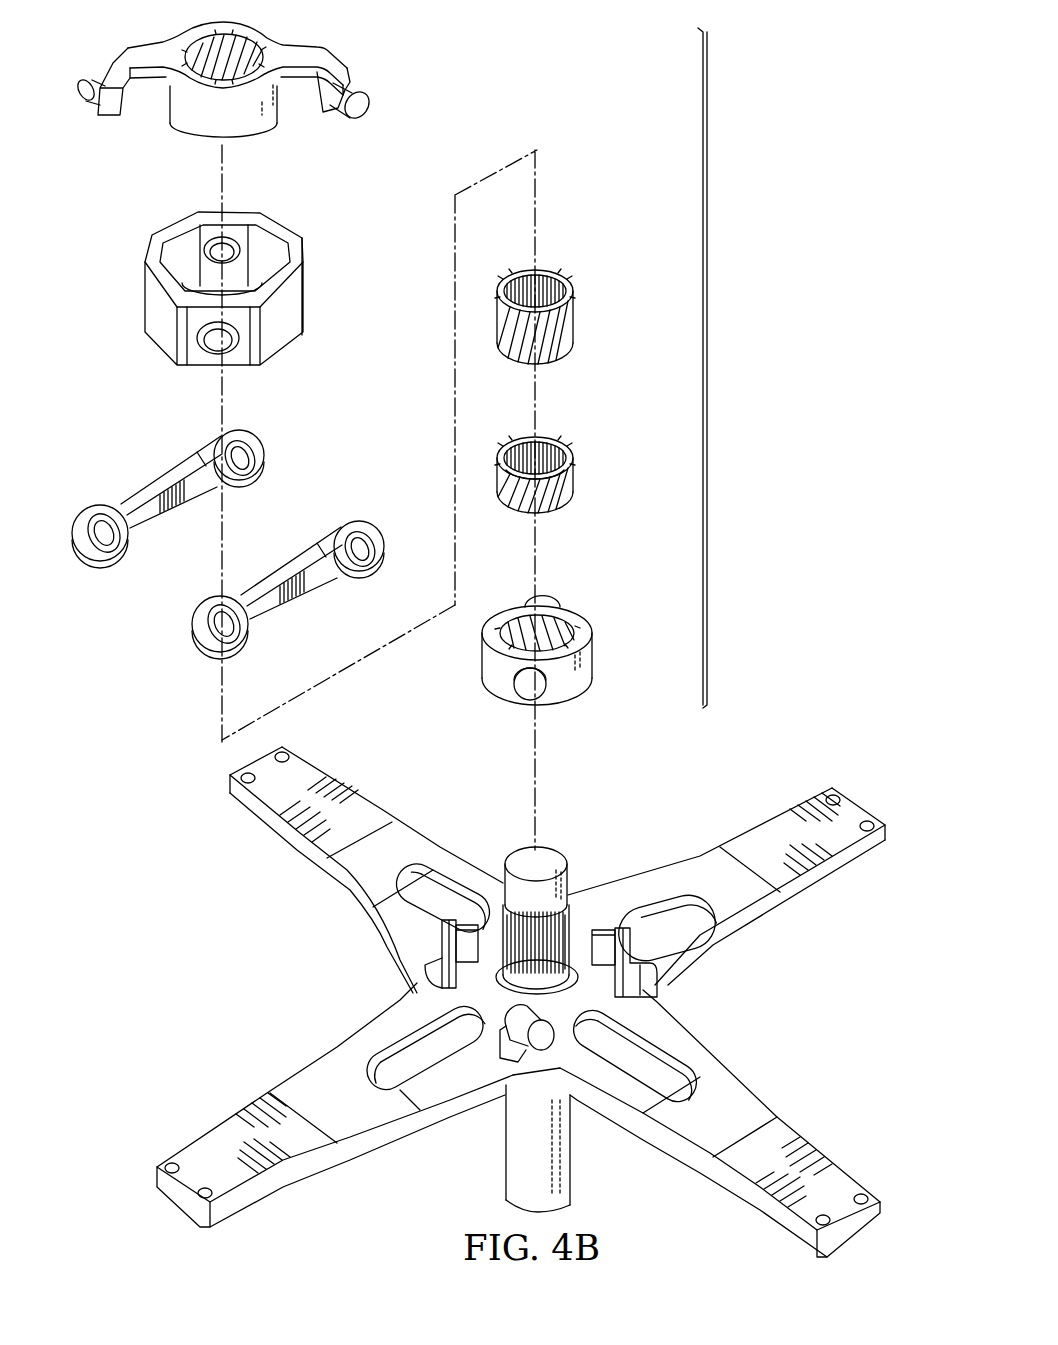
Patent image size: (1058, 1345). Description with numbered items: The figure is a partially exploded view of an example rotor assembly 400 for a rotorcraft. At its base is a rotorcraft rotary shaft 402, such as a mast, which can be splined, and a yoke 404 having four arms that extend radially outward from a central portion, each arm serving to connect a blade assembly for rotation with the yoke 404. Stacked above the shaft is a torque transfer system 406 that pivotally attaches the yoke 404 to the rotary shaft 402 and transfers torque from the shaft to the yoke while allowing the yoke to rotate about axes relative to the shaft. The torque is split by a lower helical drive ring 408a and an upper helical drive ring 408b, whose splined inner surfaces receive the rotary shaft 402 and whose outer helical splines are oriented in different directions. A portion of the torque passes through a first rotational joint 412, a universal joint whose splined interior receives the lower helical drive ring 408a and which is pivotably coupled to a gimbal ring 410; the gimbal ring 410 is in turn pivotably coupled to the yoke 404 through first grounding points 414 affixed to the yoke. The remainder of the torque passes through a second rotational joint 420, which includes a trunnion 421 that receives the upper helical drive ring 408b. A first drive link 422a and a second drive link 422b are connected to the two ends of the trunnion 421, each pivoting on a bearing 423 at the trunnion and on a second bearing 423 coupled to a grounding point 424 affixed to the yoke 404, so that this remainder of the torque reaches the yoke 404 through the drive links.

The rotor assembly 400 is at (748, 68).
The rotorcraft rotary shaft 402 is at (517, 857).
The yoke 404 is at (760, 830).
The torque transfer system 406 is at (707, 362).
The lower helical drive ring 408a is at (578, 472).
The upper helical drive ring 408b is at (578, 322).
The gimbal ring 410 is at (157, 248).
The first rotational joint 412 is at (578, 630).
The first grounding points 414 is at (432, 920).
The second rotational joint 420 is at (401, 77).
The trunnion 421 is at (167, 55).
The first drive link 422a is at (290, 565).
The second drive link 422b is at (157, 483).
The bearing 423 is at (253, 455).
The grounding point 424 is at (552, 1040).